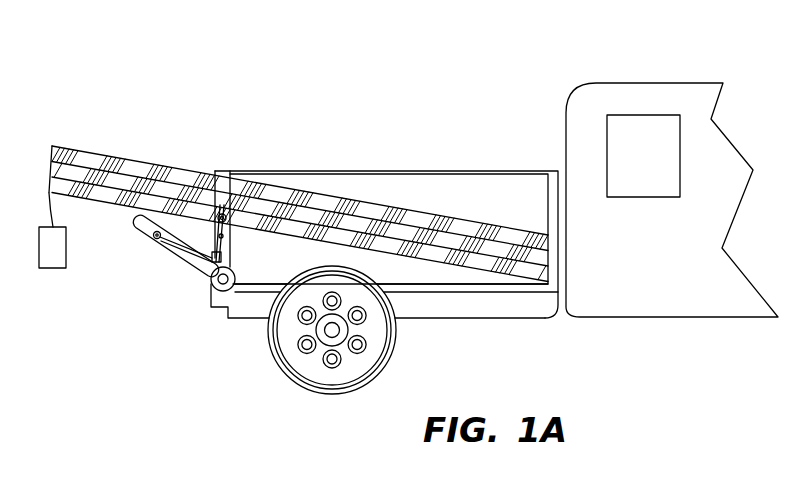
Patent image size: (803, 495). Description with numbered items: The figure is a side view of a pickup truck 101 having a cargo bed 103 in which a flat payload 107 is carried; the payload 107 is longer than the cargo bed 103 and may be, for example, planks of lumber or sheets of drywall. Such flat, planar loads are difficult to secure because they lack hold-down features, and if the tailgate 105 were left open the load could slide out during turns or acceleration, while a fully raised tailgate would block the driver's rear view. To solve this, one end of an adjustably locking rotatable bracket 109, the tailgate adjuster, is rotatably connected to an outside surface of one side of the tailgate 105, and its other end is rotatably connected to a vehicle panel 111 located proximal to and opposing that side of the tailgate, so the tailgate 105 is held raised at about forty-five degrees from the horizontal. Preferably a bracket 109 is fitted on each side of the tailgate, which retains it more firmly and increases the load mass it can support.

The pickup truck 101 is at (212, 333).
The cargo bed 103 is at (253, 268).
The tailgate 105 is at (193, 267).
The flat payload 107 is at (128, 160).
The adjustably locking rotatable bracket 109 is at (173, 242).
The vehicle panel 111 is at (217, 250).